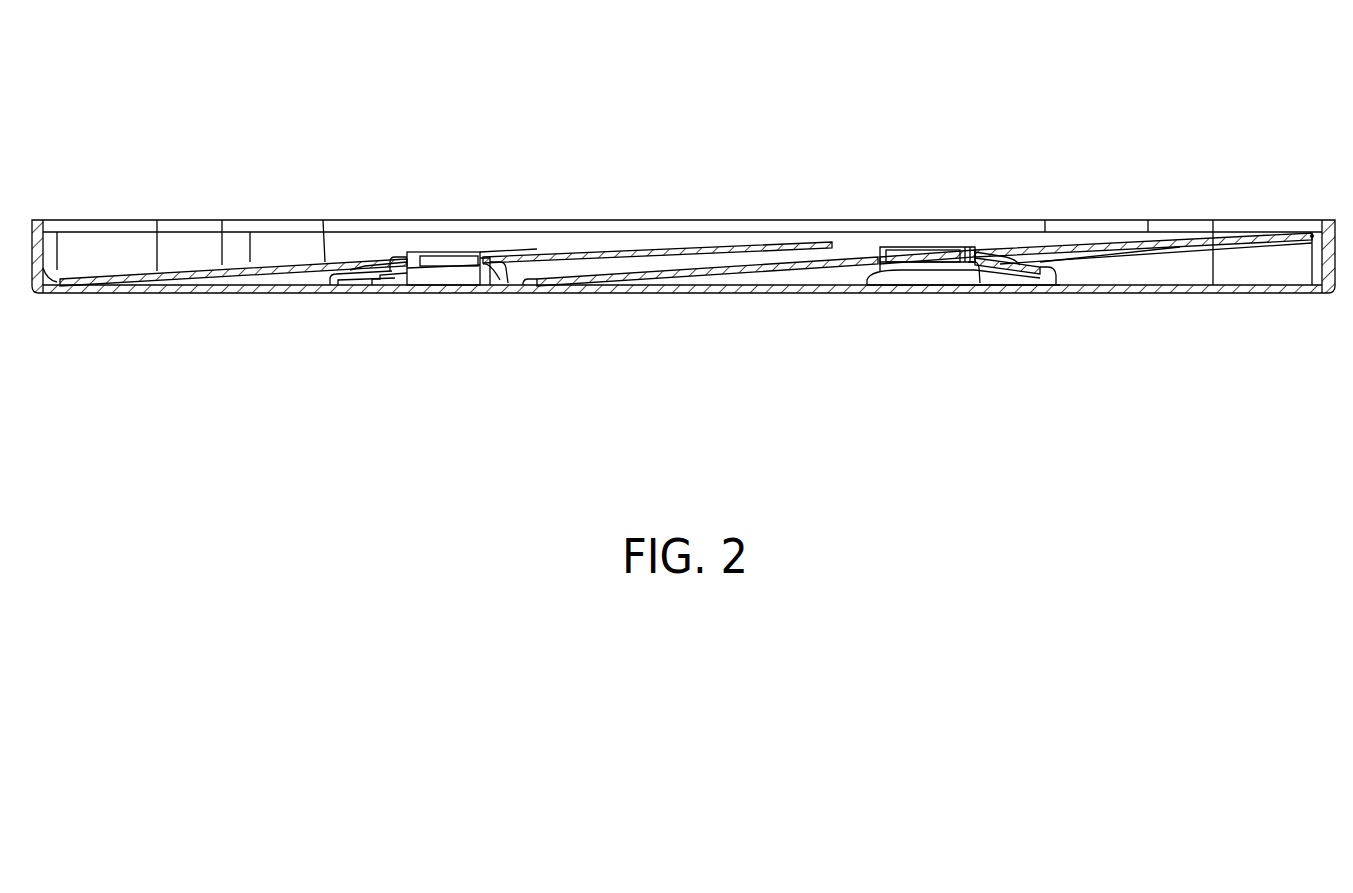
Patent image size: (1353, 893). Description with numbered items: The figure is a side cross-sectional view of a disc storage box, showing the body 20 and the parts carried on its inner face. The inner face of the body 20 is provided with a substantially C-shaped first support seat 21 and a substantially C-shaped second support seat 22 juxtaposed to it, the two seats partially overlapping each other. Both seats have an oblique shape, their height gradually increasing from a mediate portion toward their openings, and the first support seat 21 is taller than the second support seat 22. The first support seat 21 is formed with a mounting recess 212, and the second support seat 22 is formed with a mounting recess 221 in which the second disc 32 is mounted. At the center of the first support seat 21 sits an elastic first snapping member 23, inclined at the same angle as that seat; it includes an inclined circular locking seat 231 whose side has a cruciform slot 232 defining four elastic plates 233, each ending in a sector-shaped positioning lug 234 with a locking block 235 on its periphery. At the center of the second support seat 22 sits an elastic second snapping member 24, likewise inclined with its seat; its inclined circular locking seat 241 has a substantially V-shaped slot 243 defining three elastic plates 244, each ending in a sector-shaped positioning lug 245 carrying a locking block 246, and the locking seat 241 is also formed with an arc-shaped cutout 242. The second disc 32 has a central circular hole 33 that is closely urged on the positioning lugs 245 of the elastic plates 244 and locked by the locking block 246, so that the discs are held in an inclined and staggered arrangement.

The body 20 is at (1268, 218).
The first support seat 21 is at (1160, 259).
The mounting recess 212 is at (1123, 256).
The second support seat 22 is at (583, 272).
The mounting recess 221 is at (190, 266).
The first snapping member 23 is at (943, 236).
The locking seat 231 is at (1055, 293).
The cruciform slot 232 is at (862, 274).
The elastic plates 233 is at (1016, 243).
The positioning lug 234 is at (903, 250).
The locking block 235 is at (993, 243).
The second snapping member 24 is at (427, 246).
The locking seat 241 is at (335, 284).
The arc-shaped cutout 242 is at (497, 286).
The V-shaped slot 243 is at (378, 284).
The elastic plates 244 is at (362, 266).
The positioning lug 245 is at (462, 254).
The locking block 246 is at (391, 252).
The second disc 32 is at (661, 245).
The central circular hole 33 is at (493, 258).